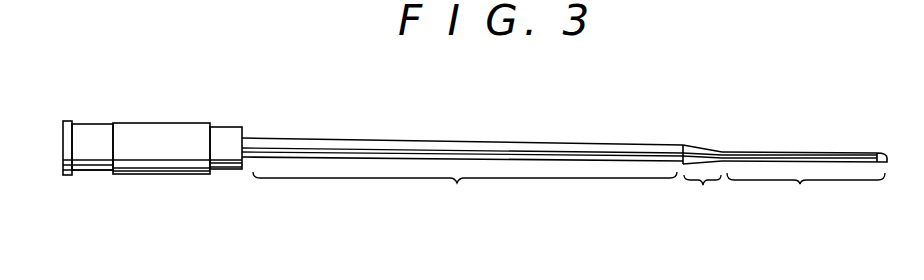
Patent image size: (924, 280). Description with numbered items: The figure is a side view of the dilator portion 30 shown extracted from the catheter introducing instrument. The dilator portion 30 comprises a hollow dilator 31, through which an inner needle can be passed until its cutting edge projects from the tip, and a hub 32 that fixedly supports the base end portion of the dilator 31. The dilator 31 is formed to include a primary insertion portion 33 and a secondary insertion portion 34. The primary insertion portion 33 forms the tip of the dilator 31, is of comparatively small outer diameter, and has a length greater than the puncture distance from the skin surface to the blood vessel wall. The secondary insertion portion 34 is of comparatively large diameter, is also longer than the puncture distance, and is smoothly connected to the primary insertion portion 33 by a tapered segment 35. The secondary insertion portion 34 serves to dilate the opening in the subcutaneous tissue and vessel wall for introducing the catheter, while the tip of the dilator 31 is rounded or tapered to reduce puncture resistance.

The dilator portion 30 is at (330, 137).
The dilator 31 is at (535, 147).
The hub 32 is at (106, 133).
The primary insertion portion 33 is at (804, 182).
The secondary insertion portion 34 is at (465, 191).
The tapered segment 35 is at (702, 178).